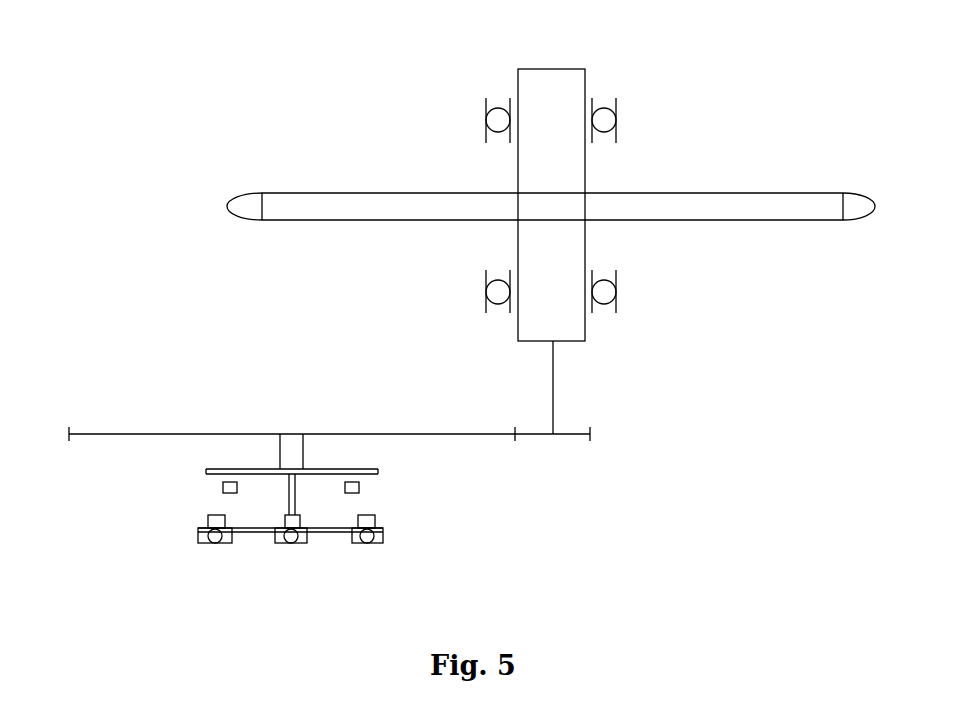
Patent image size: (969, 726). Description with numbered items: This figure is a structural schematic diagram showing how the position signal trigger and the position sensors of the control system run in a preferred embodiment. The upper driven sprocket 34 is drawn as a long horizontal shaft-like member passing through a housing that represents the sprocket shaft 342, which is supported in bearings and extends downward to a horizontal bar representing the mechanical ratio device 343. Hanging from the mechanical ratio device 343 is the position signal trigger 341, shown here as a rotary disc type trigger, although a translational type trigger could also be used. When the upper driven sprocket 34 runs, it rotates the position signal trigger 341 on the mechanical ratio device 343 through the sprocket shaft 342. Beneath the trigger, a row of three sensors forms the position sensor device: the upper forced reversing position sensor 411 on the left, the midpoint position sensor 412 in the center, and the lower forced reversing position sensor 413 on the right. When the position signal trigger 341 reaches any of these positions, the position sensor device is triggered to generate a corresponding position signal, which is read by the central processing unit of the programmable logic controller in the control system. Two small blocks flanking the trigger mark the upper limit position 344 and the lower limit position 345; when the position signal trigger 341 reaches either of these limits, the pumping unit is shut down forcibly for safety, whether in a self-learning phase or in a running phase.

The upper driven sprocket 34 is at (388, 193).
The position signal trigger 341 is at (288, 490).
The sprocket shaft 342 is at (552, 322).
The mechanical ratio device 343 is at (352, 434).
The upper limit position 344 is at (223, 490).
The lower limit position 345 is at (360, 490).
The upper forced reversing position sensor 411 is at (213, 545).
The midpoint position sensor 412 is at (290, 545).
The lower forced reversing position sensor 413 is at (370, 545).